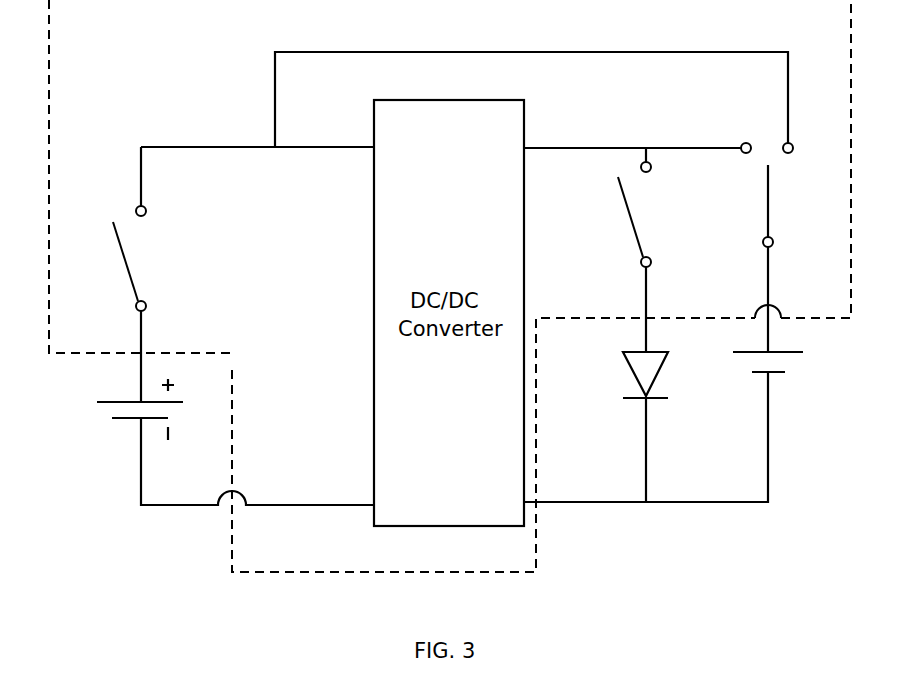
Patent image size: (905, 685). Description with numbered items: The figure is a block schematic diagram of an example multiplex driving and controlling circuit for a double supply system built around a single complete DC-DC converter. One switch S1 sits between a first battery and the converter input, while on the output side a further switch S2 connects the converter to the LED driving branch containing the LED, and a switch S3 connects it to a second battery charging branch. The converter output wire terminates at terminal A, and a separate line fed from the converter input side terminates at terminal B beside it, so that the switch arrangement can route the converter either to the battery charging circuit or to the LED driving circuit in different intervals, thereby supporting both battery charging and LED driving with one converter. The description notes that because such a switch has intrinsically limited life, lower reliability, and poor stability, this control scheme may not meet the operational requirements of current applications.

The first switch S1 is at (119, 258).
The second switch S2 is at (619, 214).
The third switch S3 is at (794, 237).
The terminal A is at (739, 131).
The terminal B is at (803, 131).
The element LED is at (623, 396).